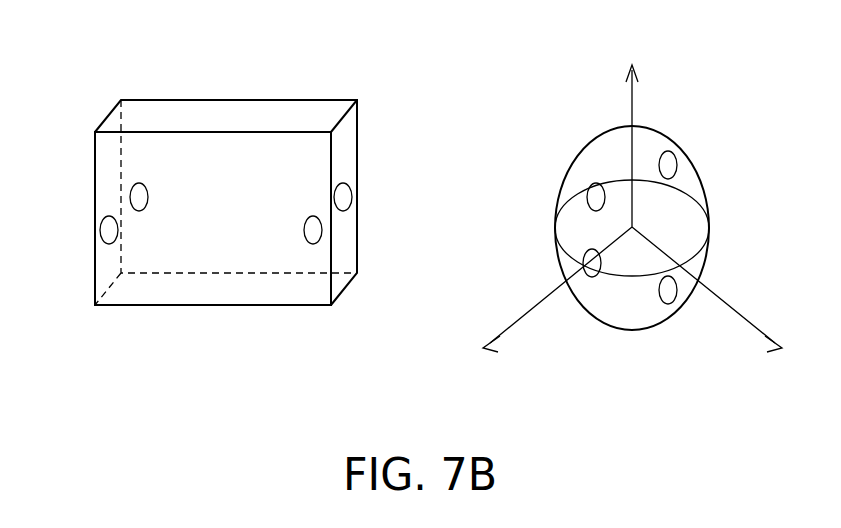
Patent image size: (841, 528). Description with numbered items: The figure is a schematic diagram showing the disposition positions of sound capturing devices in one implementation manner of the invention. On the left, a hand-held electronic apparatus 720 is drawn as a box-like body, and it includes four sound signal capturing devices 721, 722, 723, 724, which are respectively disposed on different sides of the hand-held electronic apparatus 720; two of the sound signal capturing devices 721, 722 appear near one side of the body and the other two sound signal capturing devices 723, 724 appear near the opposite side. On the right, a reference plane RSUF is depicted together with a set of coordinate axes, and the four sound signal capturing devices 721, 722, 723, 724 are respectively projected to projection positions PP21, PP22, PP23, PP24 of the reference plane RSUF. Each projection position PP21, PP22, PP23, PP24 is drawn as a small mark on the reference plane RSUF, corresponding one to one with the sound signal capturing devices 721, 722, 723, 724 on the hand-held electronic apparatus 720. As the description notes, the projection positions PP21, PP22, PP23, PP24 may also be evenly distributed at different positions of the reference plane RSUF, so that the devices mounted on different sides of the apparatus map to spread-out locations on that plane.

The hand-held electronic apparatus 720 is at (243, 100).
The sound signal capturing device 721 is at (138, 197).
The sound signal capturing device 722 is at (109, 230).
The sound signal capturing device 723 is at (345, 196).
The sound signal capturing device 724 is at (315, 230).
The reference plane RSUF is at (688, 256).
The projection position PP21 is at (584, 258).
The projection position PP22 is at (596, 194).
The projection position PP23 is at (668, 165).
The projection position PP24 is at (672, 300).